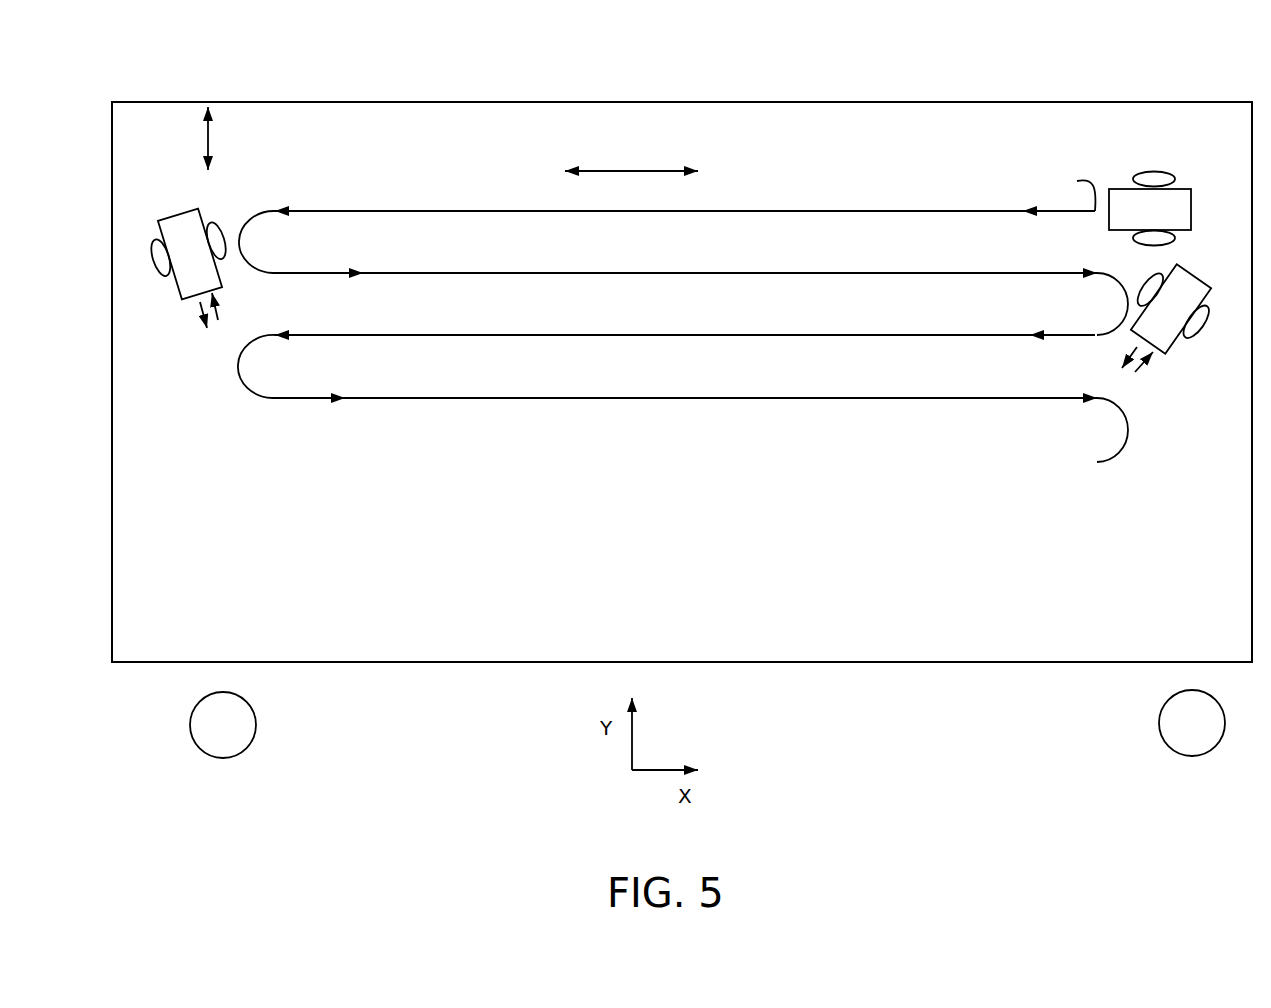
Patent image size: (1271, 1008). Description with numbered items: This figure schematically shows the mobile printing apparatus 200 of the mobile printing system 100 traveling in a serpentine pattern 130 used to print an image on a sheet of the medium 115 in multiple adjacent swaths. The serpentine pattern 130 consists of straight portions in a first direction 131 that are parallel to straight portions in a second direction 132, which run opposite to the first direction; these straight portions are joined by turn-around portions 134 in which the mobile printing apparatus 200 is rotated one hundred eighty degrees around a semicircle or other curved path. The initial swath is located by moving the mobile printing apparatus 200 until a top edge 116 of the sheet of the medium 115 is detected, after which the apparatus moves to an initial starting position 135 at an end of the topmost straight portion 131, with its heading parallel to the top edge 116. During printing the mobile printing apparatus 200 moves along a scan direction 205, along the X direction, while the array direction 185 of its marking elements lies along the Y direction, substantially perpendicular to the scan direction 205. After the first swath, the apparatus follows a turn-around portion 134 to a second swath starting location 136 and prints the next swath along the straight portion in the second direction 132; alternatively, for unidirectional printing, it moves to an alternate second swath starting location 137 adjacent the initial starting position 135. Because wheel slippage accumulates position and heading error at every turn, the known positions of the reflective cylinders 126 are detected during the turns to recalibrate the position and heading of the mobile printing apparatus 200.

The mobile printing system 100 is at (158, 62).
The sheet of the medium 115 is at (112, 498).
The top edge 116 is at (750, 103).
The reflective cylinders 126 is at (257, 717).
The serpentine pattern 130 is at (627, 296).
The straight portion in a first direction 131 is at (808, 210).
The straight portion in a second direction 132 is at (823, 272).
The turn-around portion 134 is at (238, 370).
The initial starting position 135 is at (1065, 191).
The second swath starting location 136 is at (277, 275).
The alternate second swath starting location 137 is at (1080, 270).
The array direction 185 is at (208, 132).
The mobile printing apparatus 200 is at (1195, 202).
The scan direction 205 is at (638, 168).